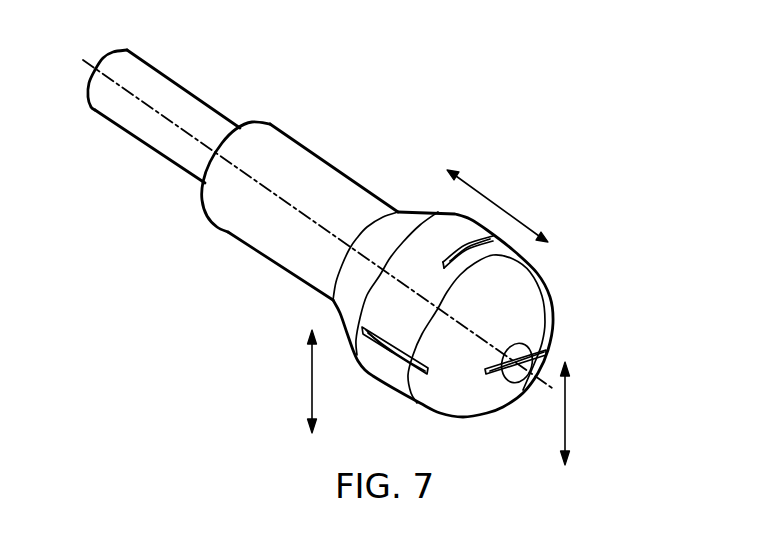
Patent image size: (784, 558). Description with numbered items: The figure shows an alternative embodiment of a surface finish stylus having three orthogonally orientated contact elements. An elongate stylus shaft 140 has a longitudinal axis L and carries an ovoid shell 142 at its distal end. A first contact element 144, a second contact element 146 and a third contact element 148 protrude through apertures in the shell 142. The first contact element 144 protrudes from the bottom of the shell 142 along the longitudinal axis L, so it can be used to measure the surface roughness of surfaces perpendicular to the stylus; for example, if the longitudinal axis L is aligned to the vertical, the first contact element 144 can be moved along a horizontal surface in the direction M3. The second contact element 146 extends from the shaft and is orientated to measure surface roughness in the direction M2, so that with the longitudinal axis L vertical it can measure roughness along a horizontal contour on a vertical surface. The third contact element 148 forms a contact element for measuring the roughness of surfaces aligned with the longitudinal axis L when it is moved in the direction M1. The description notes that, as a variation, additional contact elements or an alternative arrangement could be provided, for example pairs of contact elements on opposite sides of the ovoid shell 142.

The longitudinal axis L is at (85, 61).
The stylus shaft 140 is at (188, 123).
The ovoid shell 142 is at (430, 232).
The first contact element 144 is at (532, 350).
The second contact element 146 is at (398, 356).
The third contact element 148 is at (488, 234).
The direction M1 is at (497, 205).
The direction M2 is at (330, 381).
The direction M3 is at (583, 413).